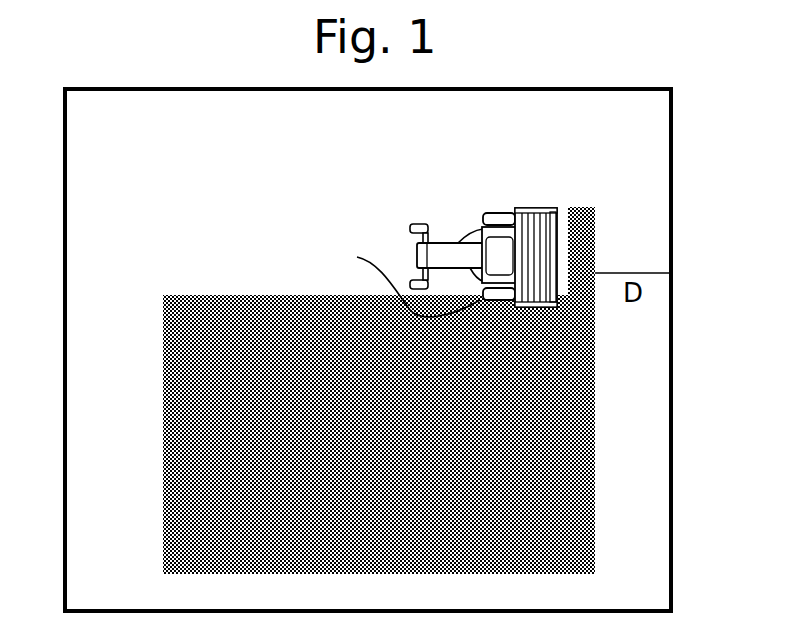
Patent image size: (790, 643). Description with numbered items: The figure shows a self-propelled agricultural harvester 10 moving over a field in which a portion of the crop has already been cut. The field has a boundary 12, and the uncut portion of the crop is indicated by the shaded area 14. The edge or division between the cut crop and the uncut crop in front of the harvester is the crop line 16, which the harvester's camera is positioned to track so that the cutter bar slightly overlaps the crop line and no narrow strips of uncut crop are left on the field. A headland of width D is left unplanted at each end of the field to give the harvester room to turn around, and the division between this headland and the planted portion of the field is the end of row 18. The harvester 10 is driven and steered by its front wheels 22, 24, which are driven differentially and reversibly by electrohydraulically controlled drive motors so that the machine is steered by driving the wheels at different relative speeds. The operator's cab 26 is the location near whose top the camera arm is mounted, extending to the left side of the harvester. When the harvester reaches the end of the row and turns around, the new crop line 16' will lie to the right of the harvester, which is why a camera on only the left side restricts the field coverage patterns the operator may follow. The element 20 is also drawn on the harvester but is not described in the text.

The self-propelled agricultural harvester 10 is at (492, 202).
The boundary 12 is at (673, 490).
The shaded area 14 is at (597, 410).
The crop line 16 is at (616, 224).
The new crop line 16' is at (231, 249).
The end of row 18 is at (595, 242).
The planter implement 20 is at (527, 162).
The front wheel 22 is at (494, 212).
The front wheel 24 is at (404, 280).
The operator's cab 26 is at (498, 248).